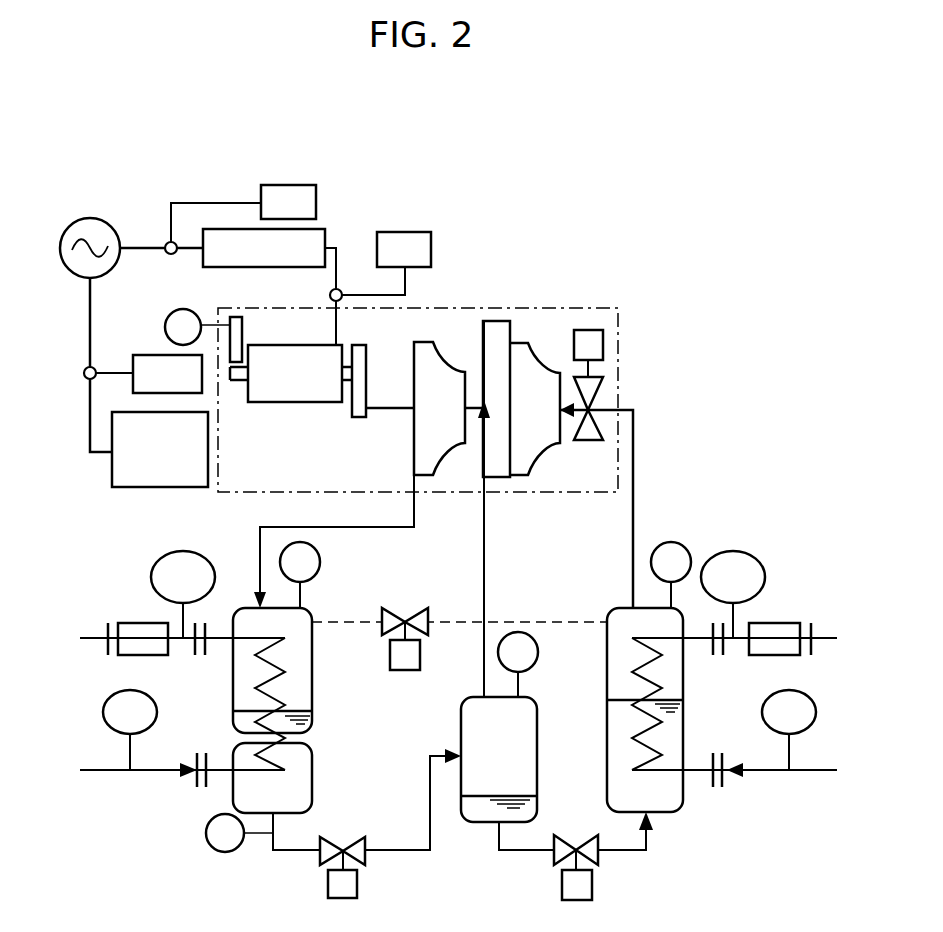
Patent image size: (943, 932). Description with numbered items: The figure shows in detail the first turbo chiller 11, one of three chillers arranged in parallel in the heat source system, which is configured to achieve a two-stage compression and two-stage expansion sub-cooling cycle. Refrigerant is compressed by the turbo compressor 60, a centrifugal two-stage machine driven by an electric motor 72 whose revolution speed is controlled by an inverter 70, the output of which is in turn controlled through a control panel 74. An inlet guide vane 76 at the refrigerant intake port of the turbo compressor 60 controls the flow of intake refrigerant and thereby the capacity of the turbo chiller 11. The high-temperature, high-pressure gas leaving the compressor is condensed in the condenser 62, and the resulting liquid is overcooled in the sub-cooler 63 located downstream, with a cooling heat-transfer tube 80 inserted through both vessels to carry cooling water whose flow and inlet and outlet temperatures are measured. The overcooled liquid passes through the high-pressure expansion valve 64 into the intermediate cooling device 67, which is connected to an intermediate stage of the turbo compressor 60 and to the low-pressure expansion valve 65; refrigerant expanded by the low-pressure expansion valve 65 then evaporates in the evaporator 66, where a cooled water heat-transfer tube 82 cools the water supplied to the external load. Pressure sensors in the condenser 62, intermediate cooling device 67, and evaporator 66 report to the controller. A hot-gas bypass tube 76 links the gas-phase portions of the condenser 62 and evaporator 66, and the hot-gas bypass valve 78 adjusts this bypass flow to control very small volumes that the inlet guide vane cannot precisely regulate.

The turbo chiller 11 is at (146, 156).
The turbo compressor 60 is at (642, 300).
The condenser 62 is at (244, 605).
The sub-cooler 63 is at (312, 770).
The high-pressure expansion valve 64 is at (358, 858).
The low-pressure expansion valve 65 is at (598, 858).
The evaporator 66 is at (620, 605).
The intermediate cooling device 67 is at (538, 745).
The inverter 70 is at (328, 235).
The electric motor 72 is at (288, 345).
The control panel 74 is at (112, 471).
The inlet guide vane 76 is at (591, 440).
The hot-gas bypass valve 78 is at (413, 614).
The cooling heat-transfer tube 80 is at (270, 695).
The cooled water heat-transfer tube 82 is at (640, 666).